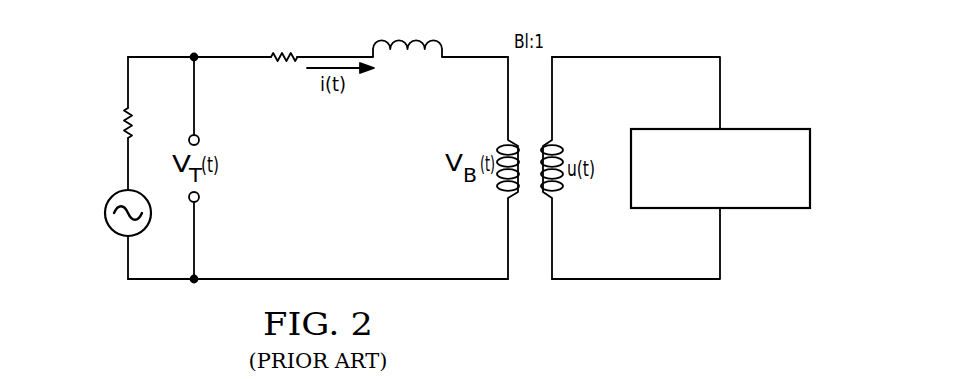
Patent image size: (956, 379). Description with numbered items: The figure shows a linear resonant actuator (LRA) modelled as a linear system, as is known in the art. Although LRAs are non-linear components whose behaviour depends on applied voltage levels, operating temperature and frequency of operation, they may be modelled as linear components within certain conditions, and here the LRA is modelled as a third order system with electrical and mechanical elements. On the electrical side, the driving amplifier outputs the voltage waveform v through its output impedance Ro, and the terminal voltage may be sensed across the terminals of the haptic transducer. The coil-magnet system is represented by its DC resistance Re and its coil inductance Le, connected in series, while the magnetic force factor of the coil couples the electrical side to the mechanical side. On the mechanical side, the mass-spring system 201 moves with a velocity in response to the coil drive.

The mass-spring system 201 is at (810, 167).
The output impedance Ro is at (110, 123).
The DC resistance Re is at (283, 43).
The coil inductance Le is at (407, 36).
The voltage waveform v is at (110, 213).